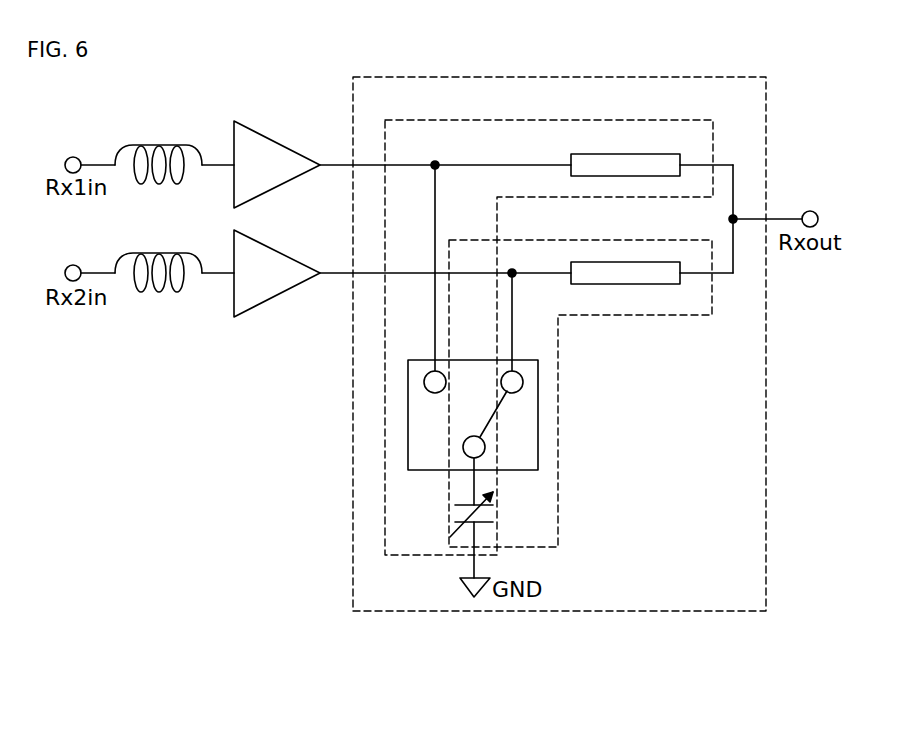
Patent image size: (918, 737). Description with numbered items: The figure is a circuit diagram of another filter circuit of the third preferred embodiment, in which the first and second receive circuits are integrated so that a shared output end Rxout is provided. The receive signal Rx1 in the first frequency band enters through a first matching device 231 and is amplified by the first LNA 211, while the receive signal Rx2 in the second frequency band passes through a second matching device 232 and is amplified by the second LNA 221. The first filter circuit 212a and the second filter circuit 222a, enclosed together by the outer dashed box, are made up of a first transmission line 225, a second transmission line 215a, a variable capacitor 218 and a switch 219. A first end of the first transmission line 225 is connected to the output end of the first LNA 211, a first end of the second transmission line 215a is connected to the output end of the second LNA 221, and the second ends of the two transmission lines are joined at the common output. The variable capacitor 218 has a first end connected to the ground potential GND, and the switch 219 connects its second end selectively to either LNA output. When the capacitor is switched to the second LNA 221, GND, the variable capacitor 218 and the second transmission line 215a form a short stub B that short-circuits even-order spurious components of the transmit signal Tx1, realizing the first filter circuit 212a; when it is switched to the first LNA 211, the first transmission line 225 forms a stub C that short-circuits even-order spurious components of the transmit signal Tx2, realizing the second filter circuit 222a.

The first LNA 211 is at (272, 141).
The second LNA 221 is at (272, 249).
The first matching device 231 is at (155, 147).
The second matching device 232 is at (155, 255).
The first transmission line 225 is at (596, 154).
The second transmission line 215a is at (594, 284).
The switch 219 is at (528, 360).
The variable capacitor 218 is at (487, 518).
The first filter circuit 212a is at (559, 330).
The second filter circuit 222a is at (518, 77).
The short stub B is at (668, 315).
The stub C is at (668, 120).